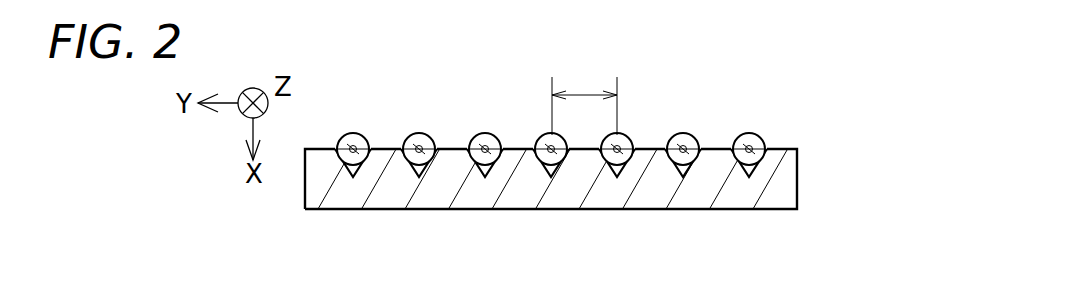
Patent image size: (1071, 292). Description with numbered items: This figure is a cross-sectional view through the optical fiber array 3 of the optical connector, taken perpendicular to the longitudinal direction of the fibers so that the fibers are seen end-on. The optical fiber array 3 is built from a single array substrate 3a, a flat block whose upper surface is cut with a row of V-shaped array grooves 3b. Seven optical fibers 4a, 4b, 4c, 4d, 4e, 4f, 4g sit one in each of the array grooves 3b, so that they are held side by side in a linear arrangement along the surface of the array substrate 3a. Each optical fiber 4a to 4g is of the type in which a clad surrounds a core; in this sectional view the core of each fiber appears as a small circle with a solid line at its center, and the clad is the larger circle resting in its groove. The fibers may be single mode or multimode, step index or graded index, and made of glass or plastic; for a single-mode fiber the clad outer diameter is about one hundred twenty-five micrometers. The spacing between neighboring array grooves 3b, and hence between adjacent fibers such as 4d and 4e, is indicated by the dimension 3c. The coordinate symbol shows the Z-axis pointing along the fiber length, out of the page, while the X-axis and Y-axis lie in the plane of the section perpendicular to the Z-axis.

The optical fiber array 3 is at (579, 162).
The array substrate 3a is at (778, 194).
The array grooves 3b is at (353, 198).
The groove pitch 3c is at (584, 99).
The optical fiber 4a is at (339, 121).
The optical fiber 4b is at (405, 121).
The optical fiber 4c is at (471, 121).
The optical fiber 4d is at (537, 121).
The optical fiber 4e is at (634, 120).
The optical fiber 4f is at (700, 120).
The optical fiber 4g is at (766, 120).